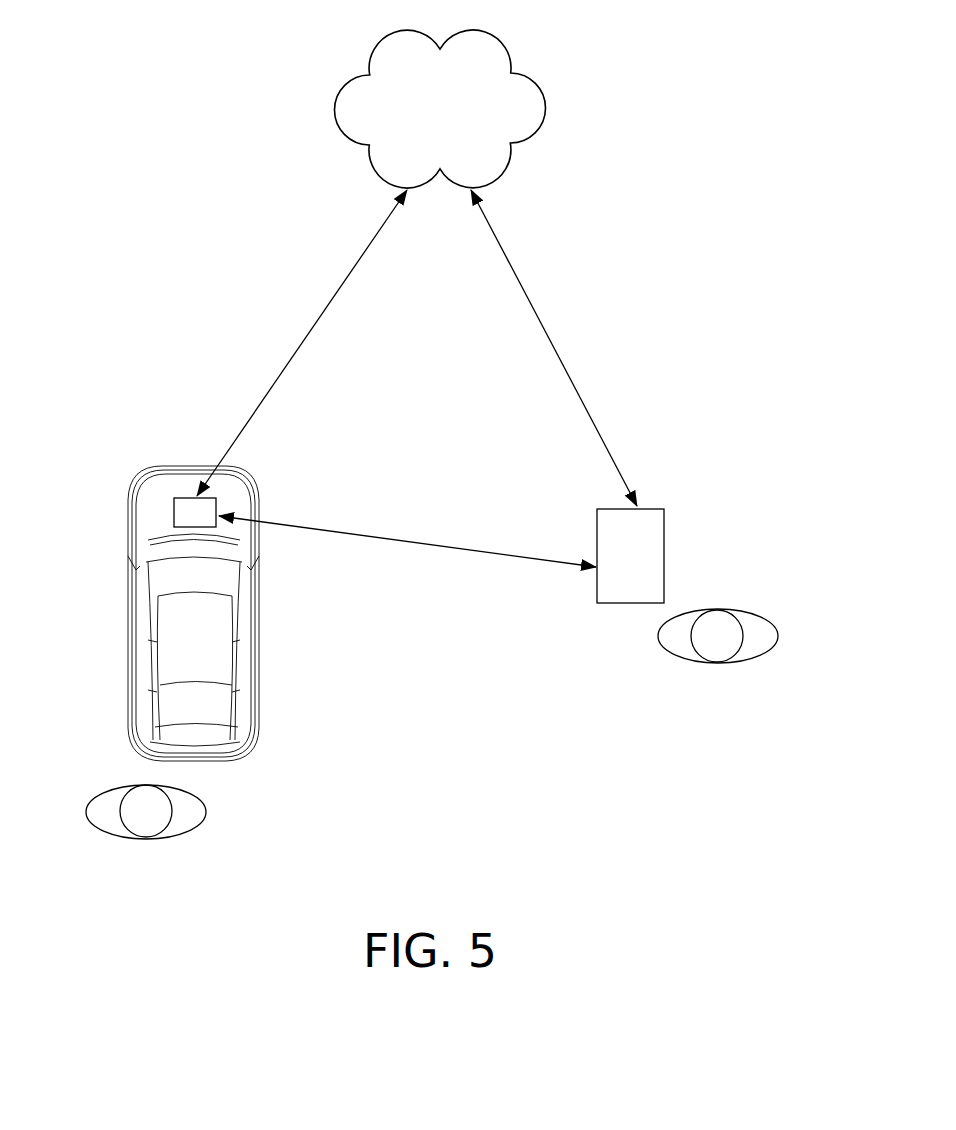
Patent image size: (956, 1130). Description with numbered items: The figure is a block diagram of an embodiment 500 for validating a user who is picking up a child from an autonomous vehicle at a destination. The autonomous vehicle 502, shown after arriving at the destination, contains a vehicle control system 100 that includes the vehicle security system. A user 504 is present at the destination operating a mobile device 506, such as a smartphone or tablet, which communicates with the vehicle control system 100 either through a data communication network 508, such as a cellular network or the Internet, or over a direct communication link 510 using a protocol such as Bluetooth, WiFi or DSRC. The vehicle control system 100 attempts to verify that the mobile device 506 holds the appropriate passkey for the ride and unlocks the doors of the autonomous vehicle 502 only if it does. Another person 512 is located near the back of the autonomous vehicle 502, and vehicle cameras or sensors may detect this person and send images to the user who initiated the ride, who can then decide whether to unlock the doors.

The embodiment of validating a user 500 is at (696, 57).
The data communication network 508 is at (460, 164).
The communication link 510 is at (430, 542).
The autonomous vehicle 502 is at (217, 644).
The vehicle control system 100 is at (175, 508).
The mobile device 506 is at (650, 566).
The user 504 is at (729, 624).
The person 512 is at (137, 798).